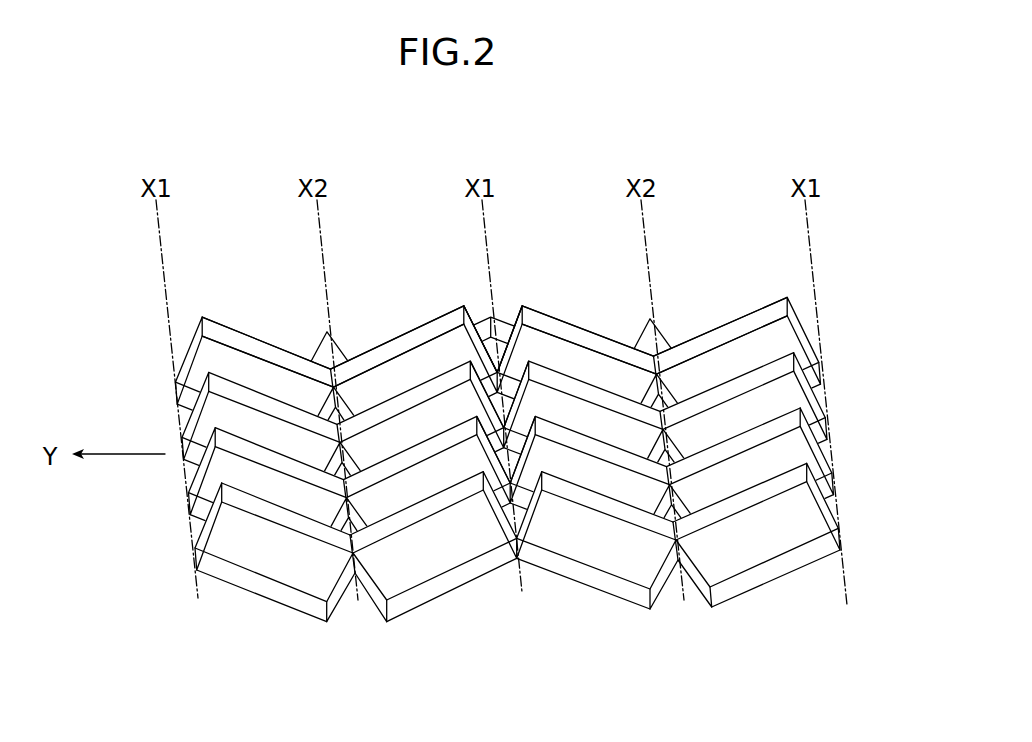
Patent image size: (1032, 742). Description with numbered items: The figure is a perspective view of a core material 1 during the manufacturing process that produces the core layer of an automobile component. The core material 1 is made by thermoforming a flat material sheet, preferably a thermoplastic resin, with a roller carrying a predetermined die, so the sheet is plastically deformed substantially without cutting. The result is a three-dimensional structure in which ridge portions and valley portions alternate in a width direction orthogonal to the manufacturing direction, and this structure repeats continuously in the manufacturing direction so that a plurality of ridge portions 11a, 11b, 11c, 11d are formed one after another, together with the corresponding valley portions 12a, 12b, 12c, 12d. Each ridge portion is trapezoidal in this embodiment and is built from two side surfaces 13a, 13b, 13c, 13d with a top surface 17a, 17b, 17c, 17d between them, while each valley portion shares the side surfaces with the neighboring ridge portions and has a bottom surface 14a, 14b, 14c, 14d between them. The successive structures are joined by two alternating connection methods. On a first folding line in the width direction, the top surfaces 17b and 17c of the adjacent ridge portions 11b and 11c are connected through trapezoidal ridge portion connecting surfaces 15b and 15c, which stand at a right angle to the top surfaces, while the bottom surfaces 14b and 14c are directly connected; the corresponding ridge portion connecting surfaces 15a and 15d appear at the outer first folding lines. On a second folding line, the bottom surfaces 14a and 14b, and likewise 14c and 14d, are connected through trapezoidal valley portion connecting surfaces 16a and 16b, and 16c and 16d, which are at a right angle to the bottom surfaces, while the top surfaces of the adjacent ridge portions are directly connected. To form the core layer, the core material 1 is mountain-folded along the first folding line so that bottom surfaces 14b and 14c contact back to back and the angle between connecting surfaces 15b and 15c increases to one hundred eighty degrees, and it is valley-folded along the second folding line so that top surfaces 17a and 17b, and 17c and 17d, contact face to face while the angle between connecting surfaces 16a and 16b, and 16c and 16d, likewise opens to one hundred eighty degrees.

The core material 1 is at (487, 427).
The ridge portion 11a is at (206, 523).
The ridge portion 11b is at (435, 590).
The ridge portion 11c is at (597, 590).
The ridge portion 11d is at (795, 496).
The valley portion 12a is at (196, 370).
The valley portion 12b is at (380, 391).
The valley portion 12c is at (562, 361).
The valley portion 12d is at (745, 361).
The side surface 13a is at (230, 548).
The side surface 13b is at (475, 542).
The side surface 13c is at (578, 547).
The side surface 13d is at (790, 542).
The bottom surface 14a is at (278, 588).
The bottom surface 14b is at (428, 553).
The bottom surface 14c is at (617, 555).
The bottom surface 14d is at (751, 590).
The ridge portion connecting surface 15a is at (200, 527).
The ridge portion connecting surface 15b is at (467, 306).
The ridge portion connecting surface 15c is at (514, 320).
The ridge portion connecting surface 15d is at (832, 487).
The valley portion connecting surface 16a is at (333, 600).
The valley portion connecting surface 16b is at (372, 606).
The valley portion connecting surface 16c is at (662, 606).
The valley portion connecting surface 16d is at (703, 606).
The top surface 17a is at (257, 342).
The top surface 17b is at (392, 340).
The top surface 17c is at (590, 335).
The top surface 17d is at (706, 345).